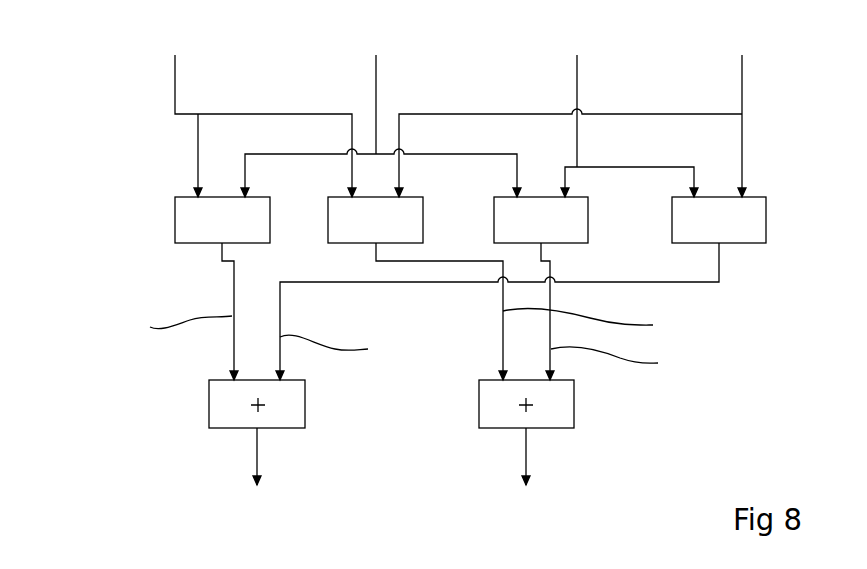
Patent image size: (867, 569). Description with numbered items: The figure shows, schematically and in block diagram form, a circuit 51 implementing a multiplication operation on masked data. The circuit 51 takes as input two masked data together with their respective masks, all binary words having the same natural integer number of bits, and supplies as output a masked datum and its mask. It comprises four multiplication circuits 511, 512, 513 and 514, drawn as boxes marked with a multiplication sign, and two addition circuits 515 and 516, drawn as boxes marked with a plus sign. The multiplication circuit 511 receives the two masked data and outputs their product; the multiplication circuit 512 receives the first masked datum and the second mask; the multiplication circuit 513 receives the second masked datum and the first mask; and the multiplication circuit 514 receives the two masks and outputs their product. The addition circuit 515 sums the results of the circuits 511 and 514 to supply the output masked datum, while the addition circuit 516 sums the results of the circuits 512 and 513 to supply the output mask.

The circuit 51 is at (108, 125).
The multiplication circuit 511 is at (187, 230).
The multiplication circuit 512 is at (337, 205).
The multiplication circuit 513 is at (507, 200).
The multiplication circuit 514 is at (683, 200).
The addition circuit 515 is at (223, 403).
The addition circuit 516 is at (558, 410).